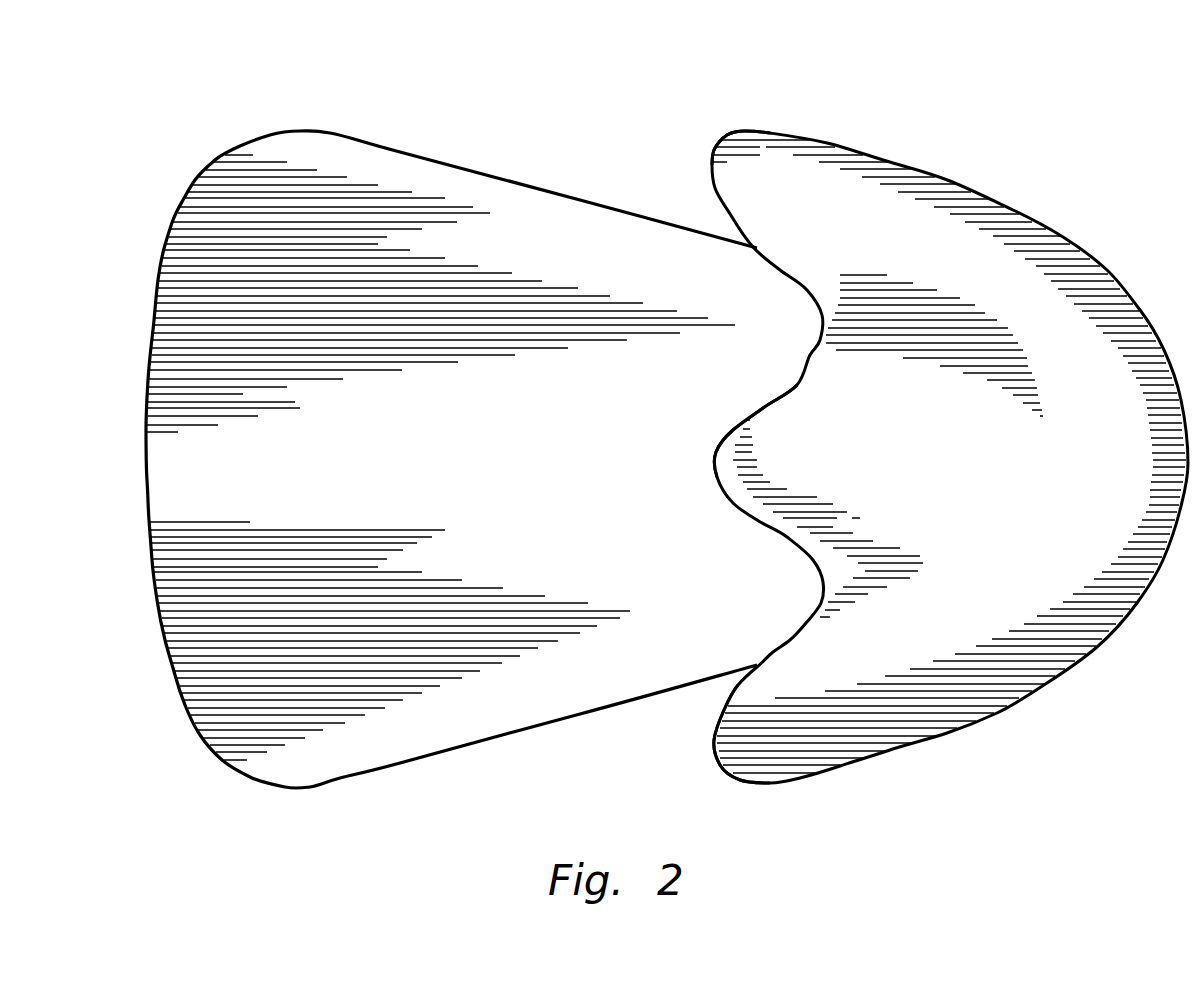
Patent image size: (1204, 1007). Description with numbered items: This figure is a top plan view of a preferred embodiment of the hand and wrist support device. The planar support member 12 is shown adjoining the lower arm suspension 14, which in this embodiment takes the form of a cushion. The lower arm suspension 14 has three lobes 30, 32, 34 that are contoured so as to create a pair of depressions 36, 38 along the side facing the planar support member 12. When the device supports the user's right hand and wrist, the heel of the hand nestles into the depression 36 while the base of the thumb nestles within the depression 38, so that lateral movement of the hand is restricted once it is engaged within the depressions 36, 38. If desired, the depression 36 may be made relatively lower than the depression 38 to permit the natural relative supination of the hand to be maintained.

The planar support member 12 is at (497, 456).
The lower arm suspension 14 is at (1068, 495).
The lobe 30 is at (727, 136).
The lobe 32 is at (740, 435).
The lobe 34 is at (712, 748).
The depression 36 is at (898, 387).
The depression 38 is at (968, 580).